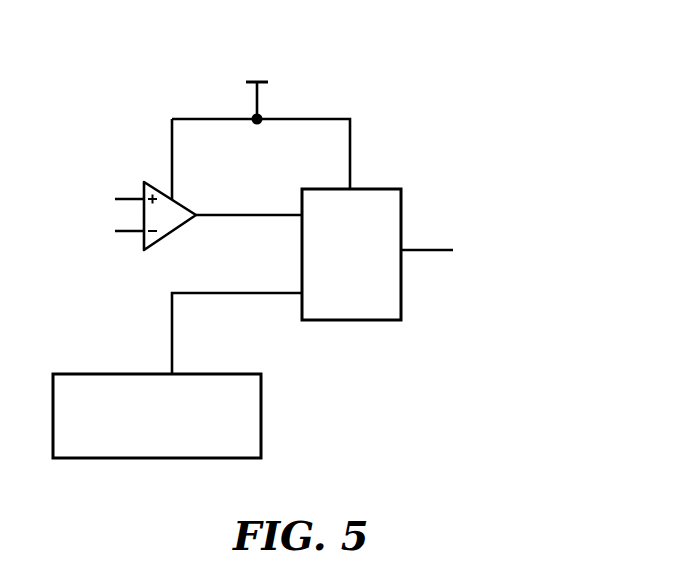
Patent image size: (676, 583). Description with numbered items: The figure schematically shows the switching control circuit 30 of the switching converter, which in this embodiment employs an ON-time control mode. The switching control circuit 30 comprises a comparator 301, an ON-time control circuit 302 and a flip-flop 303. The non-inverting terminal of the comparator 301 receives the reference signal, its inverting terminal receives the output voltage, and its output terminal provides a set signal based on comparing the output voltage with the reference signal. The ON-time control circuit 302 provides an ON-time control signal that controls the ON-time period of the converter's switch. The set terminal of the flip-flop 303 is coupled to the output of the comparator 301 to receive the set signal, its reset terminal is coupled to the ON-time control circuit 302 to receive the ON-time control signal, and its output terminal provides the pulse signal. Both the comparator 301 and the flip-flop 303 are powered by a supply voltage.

The switching control circuit 30 is at (523, 72).
The comparator 301 is at (191, 206).
The ON-time control circuit 302 is at (261, 402).
The flip-flop 303 is at (401, 197).